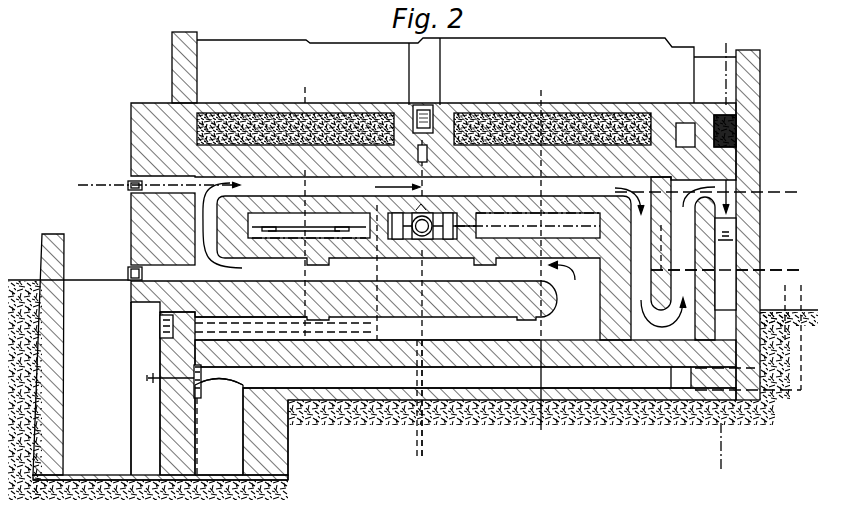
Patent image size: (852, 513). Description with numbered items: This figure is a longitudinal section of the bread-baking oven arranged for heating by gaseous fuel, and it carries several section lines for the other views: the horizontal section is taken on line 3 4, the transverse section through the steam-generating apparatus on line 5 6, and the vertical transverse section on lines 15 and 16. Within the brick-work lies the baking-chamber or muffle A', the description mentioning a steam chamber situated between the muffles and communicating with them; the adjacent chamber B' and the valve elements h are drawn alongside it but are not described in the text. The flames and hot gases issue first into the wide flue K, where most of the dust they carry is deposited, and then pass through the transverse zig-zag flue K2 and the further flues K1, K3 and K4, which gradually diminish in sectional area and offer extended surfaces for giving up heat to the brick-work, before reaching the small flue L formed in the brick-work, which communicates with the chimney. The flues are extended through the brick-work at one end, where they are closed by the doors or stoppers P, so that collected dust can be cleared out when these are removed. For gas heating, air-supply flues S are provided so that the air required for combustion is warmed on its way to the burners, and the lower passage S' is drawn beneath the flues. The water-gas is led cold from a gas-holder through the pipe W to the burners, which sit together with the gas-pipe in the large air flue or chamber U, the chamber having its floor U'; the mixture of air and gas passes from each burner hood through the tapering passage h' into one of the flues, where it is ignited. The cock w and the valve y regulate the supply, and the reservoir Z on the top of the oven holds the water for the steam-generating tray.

The section line 15 is at (727, 60).
The section line 5 is at (419, 55).
The water reservoir Z is at (423, 127).
The air-supply flue S is at (685, 135).
The door or stopper P is at (159, 231).
The section line 3 is at (120, 329).
The heating plate B' is at (309, 223).
The baking-chamber or muffle A' is at (426, 225).
The valves h is at (434, 221).
The flue K2 is at (509, 195).
The middle flue passage K1 is at (490, 270).
The wide flue K is at (367, 328).
The descending flue passage K3 is at (660, 287).
The ascending flue passage K4 is at (696, 226).
The small flue L is at (725, 245).
The section line 4 is at (786, 283).
The valve y is at (158, 326).
The tapering passage h' is at (285, 335).
The cock w is at (171, 381).
The gas pipe W is at (219, 427).
The air flue or chamber U is at (219, 455).
The floor plate U' is at (160, 496).
The bottom passage S' is at (443, 377).
The section line 6 is at (416, 411).
The section line 16 is at (722, 456).